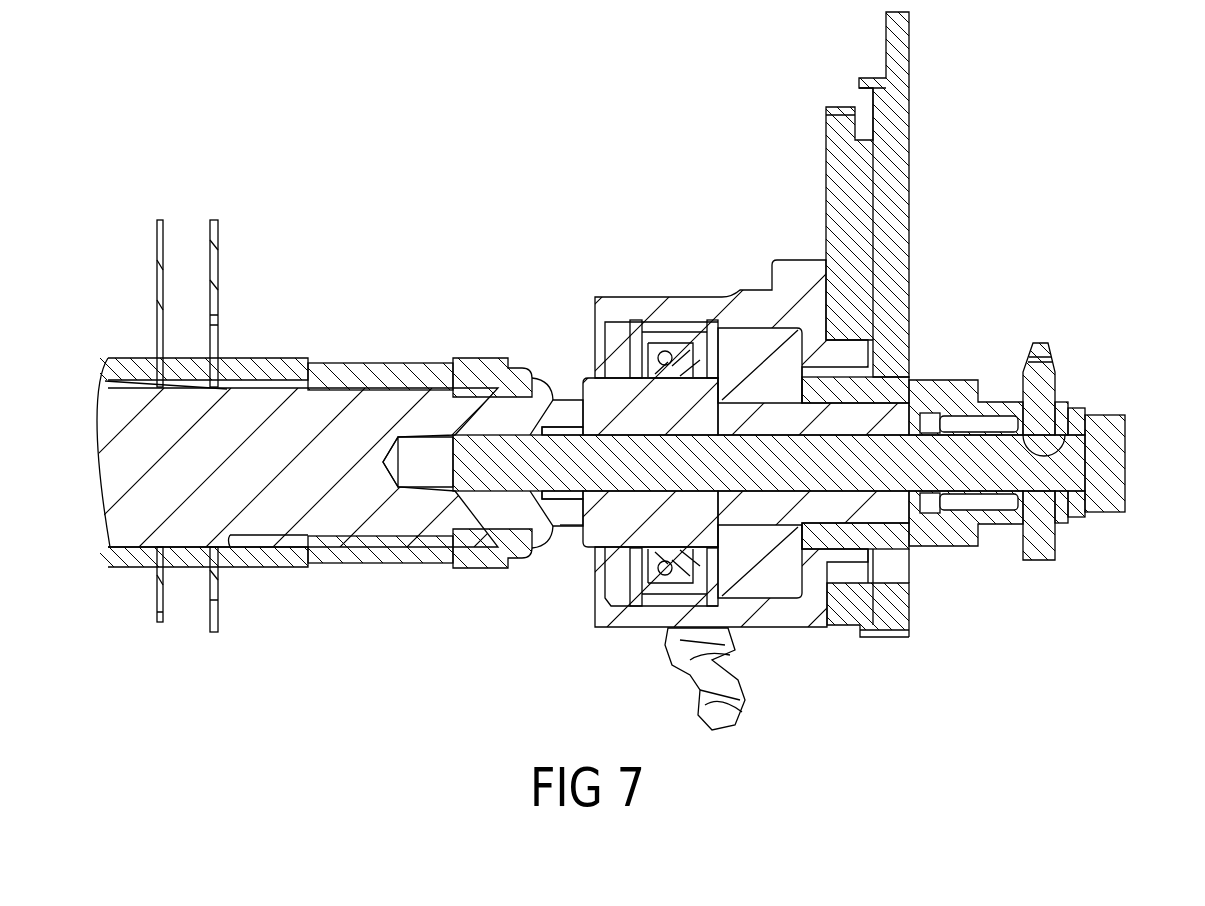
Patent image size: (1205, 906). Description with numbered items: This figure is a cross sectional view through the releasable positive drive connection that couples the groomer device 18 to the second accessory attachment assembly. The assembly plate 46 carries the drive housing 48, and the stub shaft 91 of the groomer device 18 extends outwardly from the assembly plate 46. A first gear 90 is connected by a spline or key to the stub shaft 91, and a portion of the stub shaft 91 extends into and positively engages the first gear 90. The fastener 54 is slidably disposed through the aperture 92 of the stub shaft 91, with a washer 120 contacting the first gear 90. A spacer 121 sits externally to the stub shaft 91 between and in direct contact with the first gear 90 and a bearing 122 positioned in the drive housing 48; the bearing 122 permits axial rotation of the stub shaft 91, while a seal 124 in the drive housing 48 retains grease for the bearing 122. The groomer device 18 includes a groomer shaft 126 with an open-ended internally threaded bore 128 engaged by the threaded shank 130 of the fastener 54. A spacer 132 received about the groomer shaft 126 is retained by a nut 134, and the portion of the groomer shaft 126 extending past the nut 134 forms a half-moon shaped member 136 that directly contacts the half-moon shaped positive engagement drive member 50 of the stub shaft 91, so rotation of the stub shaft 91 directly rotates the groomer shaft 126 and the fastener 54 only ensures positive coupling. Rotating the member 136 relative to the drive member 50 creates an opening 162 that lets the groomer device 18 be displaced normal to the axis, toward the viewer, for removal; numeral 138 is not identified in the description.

The groomer device 18 is at (174, 649).
The assembly plate 46 is at (745, 695).
The drive housing 48 is at (622, 630).
The positive engagement drive member 50 is at (572, 508).
The fastener 54 is at (997, 447).
The first gear 90 is at (1043, 550).
The stub shaft 91 is at (888, 515).
The aperture 92 is at (1050, 457).
The washer 120 is at (1078, 515).
The spacer 121 is at (893, 386).
The bearing 122 is at (785, 580).
The seal 124 is at (665, 575).
The groomer shaft 126 is at (362, 520).
The internally threaded bore 128 is at (430, 470).
The threaded shank 130 is at (480, 472).
The spacer 132 is at (365, 368).
The nut 134 is at (477, 370).
The half-moon shaped member 136 is at (572, 405).
The lower seal wedge 138 is at (553, 497).
The opening 162 is at (547, 427).